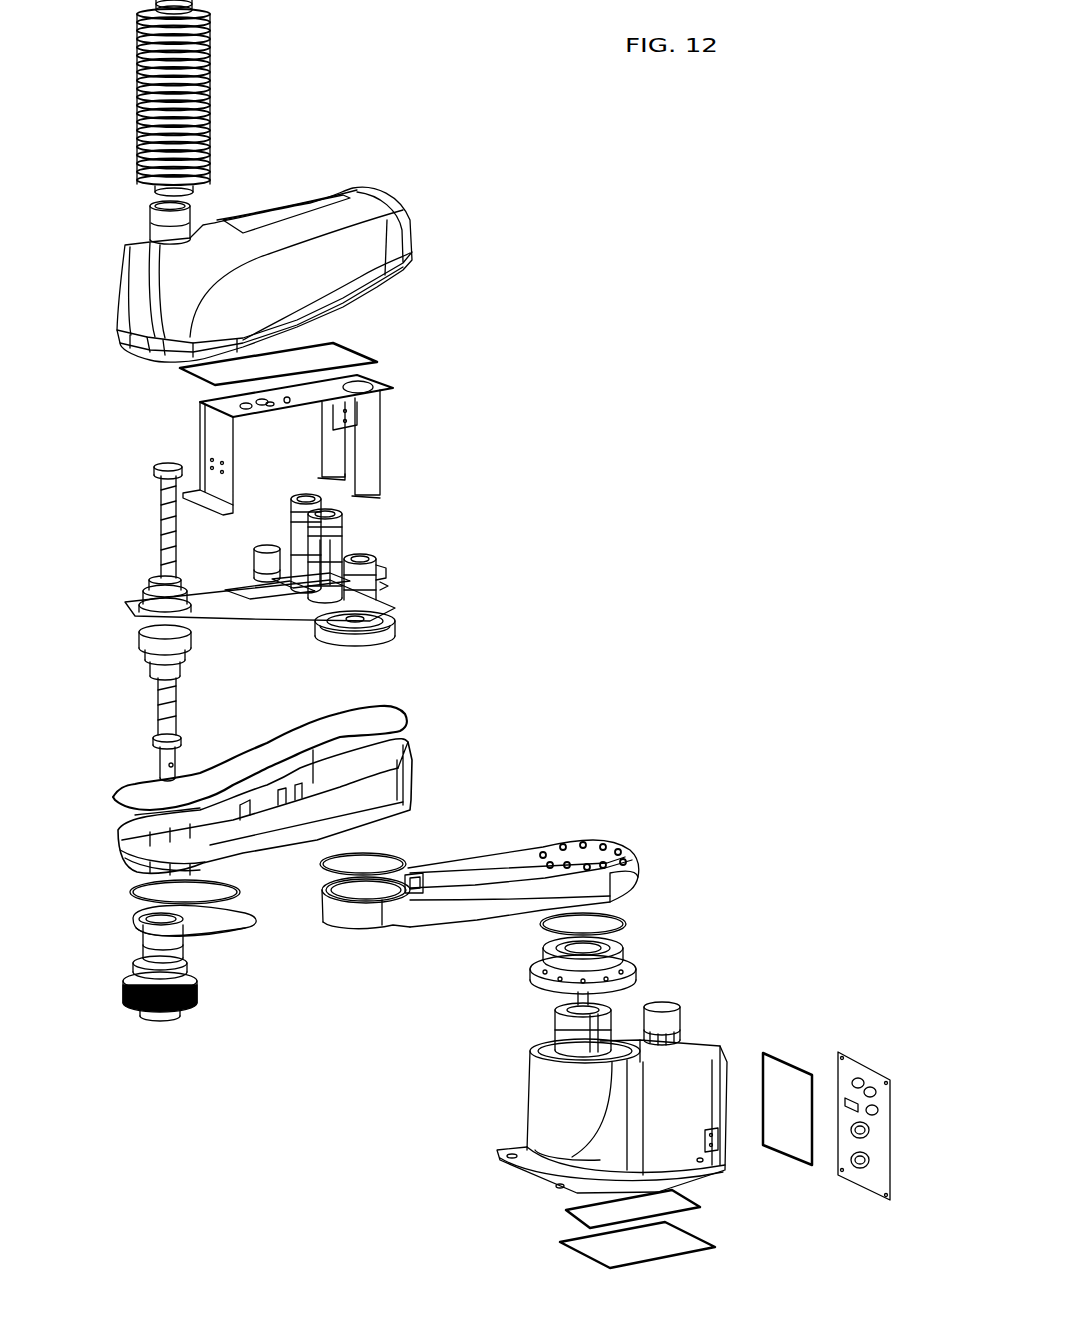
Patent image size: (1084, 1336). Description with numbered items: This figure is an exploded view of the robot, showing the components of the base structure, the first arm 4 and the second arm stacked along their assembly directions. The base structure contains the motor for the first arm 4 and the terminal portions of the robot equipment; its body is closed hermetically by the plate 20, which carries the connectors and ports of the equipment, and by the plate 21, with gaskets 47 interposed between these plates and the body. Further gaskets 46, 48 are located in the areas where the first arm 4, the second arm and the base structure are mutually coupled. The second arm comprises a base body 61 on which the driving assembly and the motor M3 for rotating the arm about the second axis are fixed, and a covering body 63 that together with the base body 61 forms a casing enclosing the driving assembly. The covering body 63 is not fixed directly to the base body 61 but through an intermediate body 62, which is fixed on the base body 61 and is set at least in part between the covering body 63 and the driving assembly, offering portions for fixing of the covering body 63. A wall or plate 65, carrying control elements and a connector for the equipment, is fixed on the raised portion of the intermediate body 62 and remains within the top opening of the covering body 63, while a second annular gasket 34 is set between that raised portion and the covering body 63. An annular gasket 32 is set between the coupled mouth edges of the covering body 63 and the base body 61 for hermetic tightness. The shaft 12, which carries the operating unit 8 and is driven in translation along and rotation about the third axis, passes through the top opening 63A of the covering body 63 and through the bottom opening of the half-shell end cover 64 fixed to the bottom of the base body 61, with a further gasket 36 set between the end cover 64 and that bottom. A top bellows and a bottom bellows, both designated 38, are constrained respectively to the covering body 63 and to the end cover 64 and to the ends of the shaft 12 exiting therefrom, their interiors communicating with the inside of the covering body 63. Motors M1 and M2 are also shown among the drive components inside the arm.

The bellows 38 is at (212, 57).
The top opening 63A is at (150, 210).
The covering body 63 is at (415, 243).
The second annular gasket 34 is at (357, 349).
The wall or plate 65 is at (393, 386).
The intermediate body 62 is at (396, 425).
The shaft 12 is at (154, 521).
The operating unit 8 is at (150, 765).
The motor M1 is at (346, 522).
The motor M2 is at (302, 500).
The motor M3 is at (383, 565).
The annular gasket 32 is at (402, 715).
The base body 61 is at (412, 792).
The gasket 36 is at (130, 891).
The end cover 64 is at (131, 922).
The gasket 46 is at (396, 857).
The first arm 4 is at (347, 918).
The gasket 48 is at (631, 921).
The plate 21 is at (672, 1246).
The gaskets 47 is at (790, 1063).
The plate 20 is at (890, 1110).